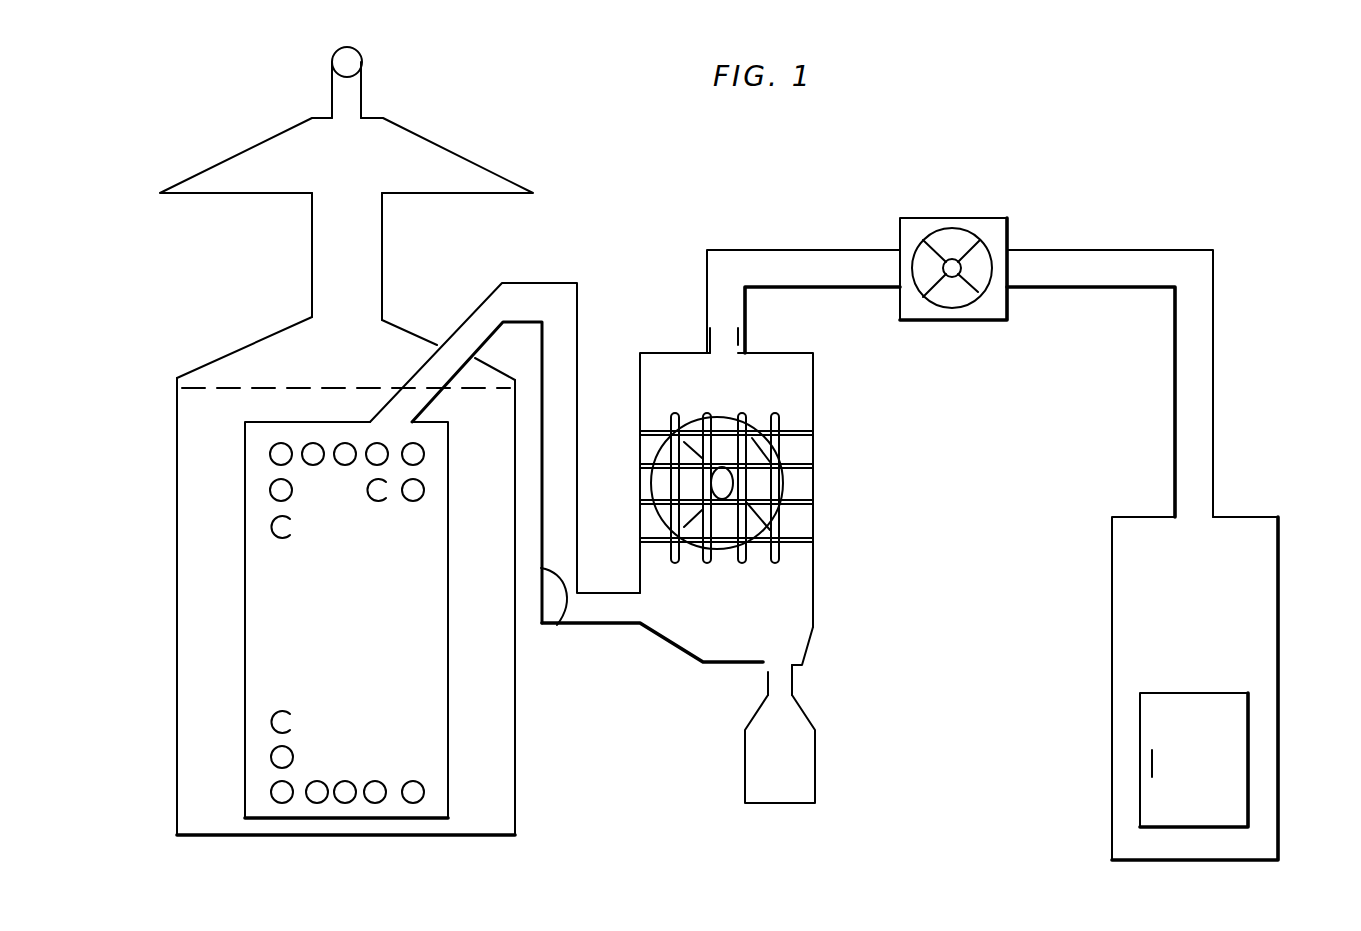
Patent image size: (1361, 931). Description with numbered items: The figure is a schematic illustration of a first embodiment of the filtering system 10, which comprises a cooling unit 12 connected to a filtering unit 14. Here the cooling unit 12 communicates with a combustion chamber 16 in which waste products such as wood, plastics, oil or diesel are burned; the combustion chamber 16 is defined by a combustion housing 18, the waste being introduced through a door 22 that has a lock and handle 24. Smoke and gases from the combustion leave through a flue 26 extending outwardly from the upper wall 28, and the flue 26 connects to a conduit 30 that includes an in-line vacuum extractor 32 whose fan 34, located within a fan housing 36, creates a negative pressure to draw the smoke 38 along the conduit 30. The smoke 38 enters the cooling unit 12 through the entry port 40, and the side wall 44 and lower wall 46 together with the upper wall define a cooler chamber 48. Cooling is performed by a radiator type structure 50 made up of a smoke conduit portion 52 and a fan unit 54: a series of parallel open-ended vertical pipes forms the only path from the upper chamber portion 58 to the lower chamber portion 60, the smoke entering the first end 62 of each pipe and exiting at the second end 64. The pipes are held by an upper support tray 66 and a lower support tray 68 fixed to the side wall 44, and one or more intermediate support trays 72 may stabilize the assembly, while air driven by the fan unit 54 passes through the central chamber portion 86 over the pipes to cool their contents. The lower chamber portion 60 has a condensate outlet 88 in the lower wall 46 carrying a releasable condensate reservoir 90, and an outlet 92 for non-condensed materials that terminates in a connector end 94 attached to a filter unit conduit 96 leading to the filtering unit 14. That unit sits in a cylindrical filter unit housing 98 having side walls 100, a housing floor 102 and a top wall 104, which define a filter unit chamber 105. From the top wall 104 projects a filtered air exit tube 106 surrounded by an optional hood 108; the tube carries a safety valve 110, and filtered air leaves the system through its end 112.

The filtering system 10 is at (750, 180).
The cooling unit 12 is at (818, 677).
The filtering unit 14 is at (367, 826).
The combustion chamber 16 is at (1267, 565).
The combustion housing 18 is at (1280, 643).
The door 22 is at (1237, 758).
The lock and handle 24 is at (1148, 763).
The flue 26 is at (1213, 412).
The upper wall 28 is at (1250, 518).
The conduit 30 is at (753, 260).
The in-line vacuum extractor 32 is at (982, 190).
The fan 34 is at (970, 290).
The fan housing 36 is at (937, 320).
The smoke 38 is at (845, 263).
The entry port 40 is at (725, 333).
The side wall 44 is at (815, 477).
The lower wall 46 is at (687, 655).
The cooler chamber 48 is at (795, 630).
The radiator type structure 50 is at (643, 530).
The smoke conduit portion 52 is at (675, 512).
The fan unit 54 is at (693, 413).
The upper chamber portion 58 is at (780, 372).
The lower chamber portion 60 is at (750, 616).
The first end 62 is at (780, 408).
The second end 64 is at (773, 562).
The upper support tray 66 is at (798, 433).
The lower support tray 68 is at (798, 543).
The intermediate support tray 72 is at (800, 502).
The central chamber portion 86 is at (645, 445).
The condensate outlet 88 is at (793, 678).
The condensate reservoir 90 is at (805, 780).
The outlet for non-condensed materials 92 is at (609, 607).
The connector end 94 is at (557, 625).
The filter unit conduit 96 is at (552, 293).
The filter unit housing 98 is at (513, 817).
The side walls 100 is at (177, 523).
The housing floor 102 is at (305, 840).
The top wall 104 is at (258, 345).
The filter unit chamber 105 is at (505, 778).
The filtered air exit tube 106 is at (372, 252).
The hood 108 is at (505, 183).
The safety valve 110 is at (362, 62).
The end 112 is at (363, 97).